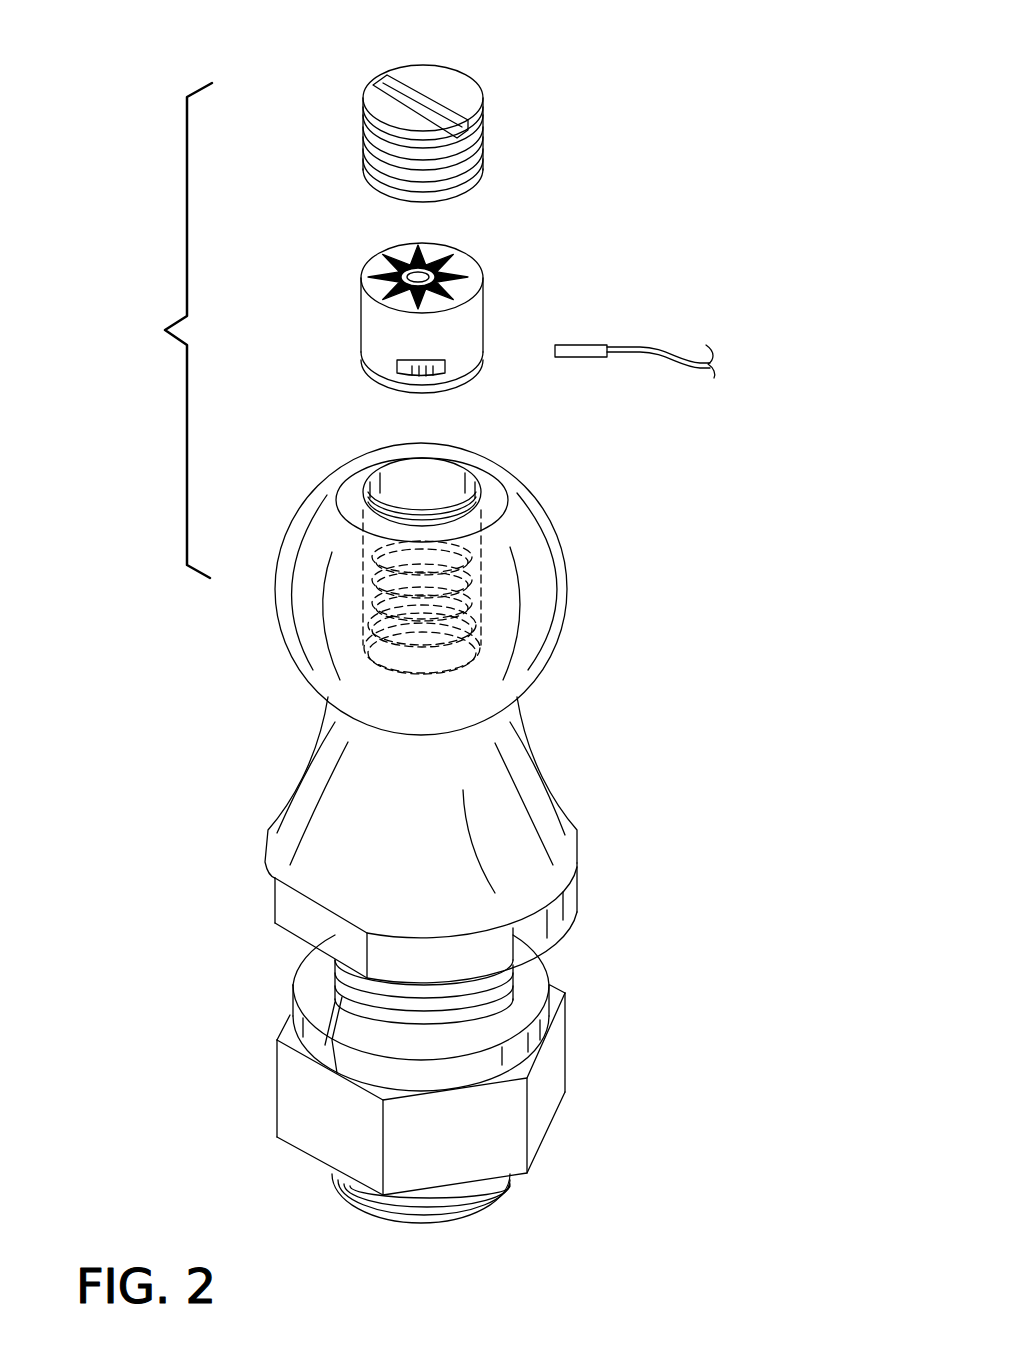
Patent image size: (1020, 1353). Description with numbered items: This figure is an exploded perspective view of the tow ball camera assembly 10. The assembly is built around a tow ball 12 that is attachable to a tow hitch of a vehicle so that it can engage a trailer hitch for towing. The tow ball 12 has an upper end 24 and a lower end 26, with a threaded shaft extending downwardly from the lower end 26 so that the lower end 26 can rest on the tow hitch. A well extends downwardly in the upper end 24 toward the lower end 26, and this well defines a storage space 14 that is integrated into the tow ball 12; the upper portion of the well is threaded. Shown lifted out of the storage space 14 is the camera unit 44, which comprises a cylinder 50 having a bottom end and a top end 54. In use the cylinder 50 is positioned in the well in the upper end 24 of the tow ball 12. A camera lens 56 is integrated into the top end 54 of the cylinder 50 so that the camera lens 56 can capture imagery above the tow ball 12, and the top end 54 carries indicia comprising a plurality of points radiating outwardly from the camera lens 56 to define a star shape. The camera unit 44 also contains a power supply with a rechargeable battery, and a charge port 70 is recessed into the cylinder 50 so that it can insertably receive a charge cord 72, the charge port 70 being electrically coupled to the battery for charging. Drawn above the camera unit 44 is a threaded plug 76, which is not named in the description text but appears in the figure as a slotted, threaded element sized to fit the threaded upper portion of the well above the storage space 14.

The tow ball camera assembly 10 is at (706, 153).
The tow ball 12 is at (612, 541).
The storage space 14 is at (392, 460).
The upper end 24 is at (490, 472).
The lower end 26 is at (565, 923).
The camera unit 44 is at (523, 290).
The cylinder 50 is at (363, 318).
The top end 54 is at (378, 268).
The camera lens 56 is at (432, 270).
The charge port 70 is at (452, 396).
The charge cord 72 is at (607, 345).
The plug 76 is at (437, 72).